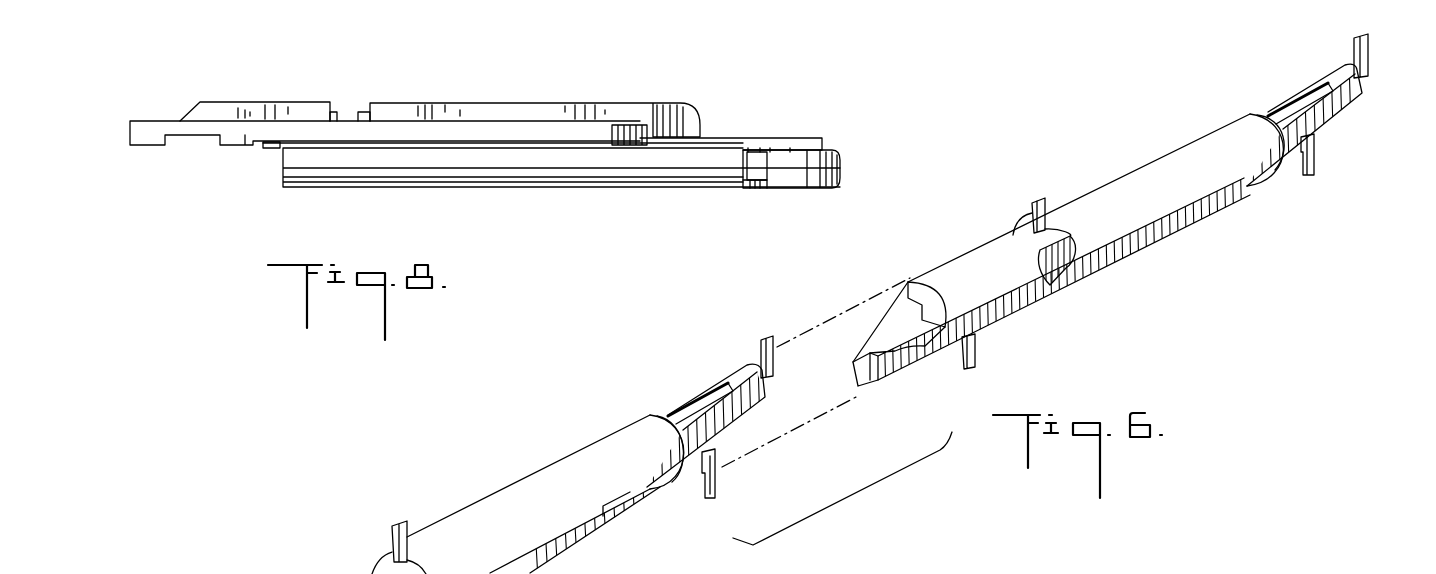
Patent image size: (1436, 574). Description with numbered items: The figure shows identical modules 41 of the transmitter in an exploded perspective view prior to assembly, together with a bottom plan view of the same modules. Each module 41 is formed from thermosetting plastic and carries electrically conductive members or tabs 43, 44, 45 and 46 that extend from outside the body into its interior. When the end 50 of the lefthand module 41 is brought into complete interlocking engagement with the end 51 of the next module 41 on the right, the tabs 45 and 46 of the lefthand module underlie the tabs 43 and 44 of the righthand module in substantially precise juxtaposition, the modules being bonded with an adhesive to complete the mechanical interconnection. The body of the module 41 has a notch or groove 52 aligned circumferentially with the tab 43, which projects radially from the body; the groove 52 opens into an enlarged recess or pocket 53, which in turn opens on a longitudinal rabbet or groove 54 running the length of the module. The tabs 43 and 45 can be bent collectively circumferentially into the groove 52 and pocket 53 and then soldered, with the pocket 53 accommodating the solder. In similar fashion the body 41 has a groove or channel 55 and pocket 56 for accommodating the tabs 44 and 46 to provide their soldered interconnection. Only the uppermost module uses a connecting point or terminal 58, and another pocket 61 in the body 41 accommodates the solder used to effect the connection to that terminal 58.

In FIG. 8, the module 41 is at (497, 177).
In FIG. 6, the module 41 is at (1173, 162).
In FIG. 6, the conductive tab 43 is at (1048, 200).
In FIG. 8, the conductive tab 44 is at (275, 148).
In FIG. 6, the conductive tab 44 is at (975, 355).
In FIG. 6, the conductive tab 45 is at (1368, 53).
In FIG. 8, the conductive tab 46 is at (748, 140).
In FIG. 6, the conductive tab 46 is at (1314, 161).
In FIG. 8, the end of module 50 is at (842, 162).
In FIG. 6, the end of module 50 is at (763, 393).
In FIG. 8, the end of module 51 is at (212, 104).
In FIG. 6, the end of module 51 is at (877, 372).
In FIG. 8, the notch or groove 52 is at (336, 112).
In FIG. 6, the notch or groove 52 is at (1068, 225).
In FIG. 8, the recess or pocket 53 is at (362, 112).
In FIG. 8, the longitudinal rabbet or groove 54 is at (455, 121).
In FIG. 6, the longitudinal rabbet or groove 54 is at (1123, 238).
In FIG. 8, the groove or channel 55 is at (750, 166).
In FIG. 8, the pocket 56 is at (763, 188).
In FIG. 6, the connecting point or terminal 58 is at (1281, 104).
In FIG. 6, the pocket 61 is at (1267, 107).